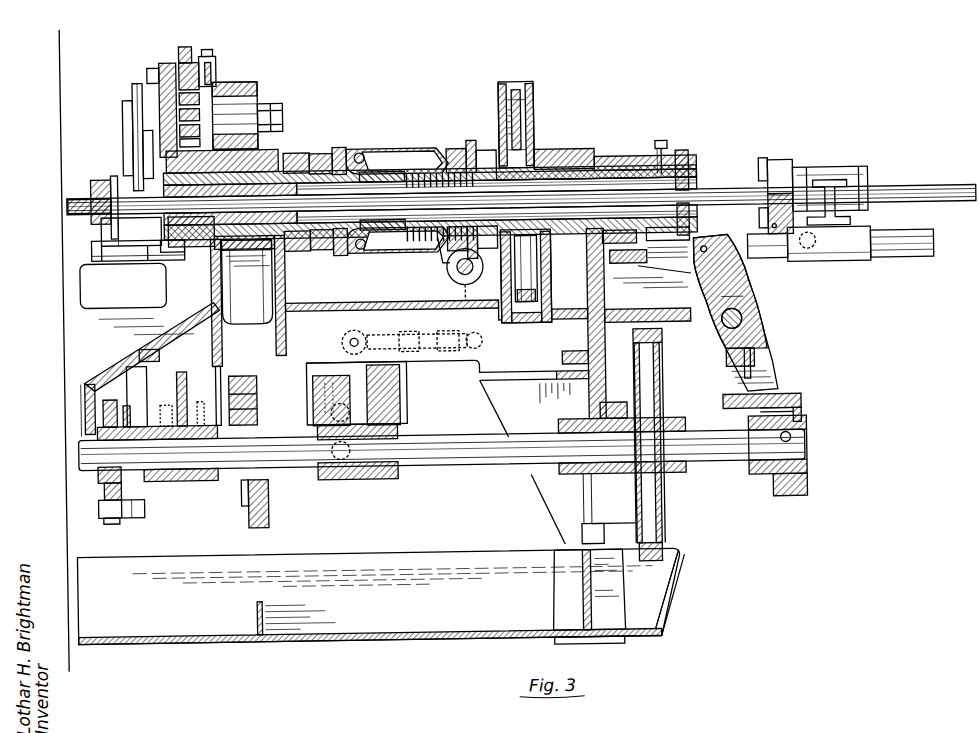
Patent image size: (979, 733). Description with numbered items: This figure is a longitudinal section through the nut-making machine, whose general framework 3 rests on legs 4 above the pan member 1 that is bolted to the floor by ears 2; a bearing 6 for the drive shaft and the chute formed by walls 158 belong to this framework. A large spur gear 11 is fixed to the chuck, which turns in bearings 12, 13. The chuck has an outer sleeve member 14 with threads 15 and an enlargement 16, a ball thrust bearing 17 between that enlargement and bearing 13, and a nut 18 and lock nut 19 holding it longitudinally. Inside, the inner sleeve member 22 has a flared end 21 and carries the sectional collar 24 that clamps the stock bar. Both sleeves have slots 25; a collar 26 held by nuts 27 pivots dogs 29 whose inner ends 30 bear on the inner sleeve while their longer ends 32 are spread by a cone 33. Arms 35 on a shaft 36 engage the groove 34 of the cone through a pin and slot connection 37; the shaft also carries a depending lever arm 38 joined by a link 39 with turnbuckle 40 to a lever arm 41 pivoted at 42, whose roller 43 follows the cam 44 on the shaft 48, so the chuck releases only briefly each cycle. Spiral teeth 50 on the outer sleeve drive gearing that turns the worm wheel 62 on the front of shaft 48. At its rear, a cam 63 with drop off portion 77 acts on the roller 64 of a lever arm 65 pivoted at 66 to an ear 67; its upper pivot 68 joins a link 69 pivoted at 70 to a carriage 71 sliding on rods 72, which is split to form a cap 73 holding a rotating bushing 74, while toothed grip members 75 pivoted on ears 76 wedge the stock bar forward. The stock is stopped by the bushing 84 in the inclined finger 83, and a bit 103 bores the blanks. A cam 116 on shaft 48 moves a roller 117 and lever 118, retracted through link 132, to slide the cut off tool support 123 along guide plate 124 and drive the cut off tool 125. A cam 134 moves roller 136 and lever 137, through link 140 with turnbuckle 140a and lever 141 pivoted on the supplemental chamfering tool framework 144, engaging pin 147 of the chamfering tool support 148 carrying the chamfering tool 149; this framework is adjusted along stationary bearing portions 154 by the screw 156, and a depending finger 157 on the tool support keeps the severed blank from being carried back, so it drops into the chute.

The dish or pan member 1 is at (420, 612).
The outstanding ears 2 is at (600, 640).
The general framework 3 is at (100, 330).
The legs 4 is at (663, 540).
The bearing 6 is at (65, 23).
The large spur gear 11 is at (525, 82).
The bearing 12 is at (570, 150).
The bearing 13 is at (285, 150).
The outer sleeve member 14 is at (625, 158).
The threaded portion 15 is at (322, 150).
The enlargement 16 is at (168, 160).
The ball thrust bearing 17 is at (270, 148).
The nut 18 is at (295, 150).
The lock nut 19 is at (305, 150).
The flared end 21 is at (225, 246).
The inner sleeve member 22 is at (521, 194).
The collar 24 is at (168, 245).
The slots 25 is at (412, 172).
The collar 26 is at (363, 150).
The nuts 27 is at (329, 258).
The dogs 29 is at (392, 148).
The inner ends 30 is at (372, 146).
The outer or longer ends 32 is at (460, 148).
The cone 33 is at (430, 172).
The circumferential groove 34 is at (475, 140).
The arms 35 is at (440, 250).
The shaft 36 is at (458, 272).
The pin and slot connection 37 is at (490, 195).
The depending lever arm 38 is at (460, 320).
The link 39 is at (445, 350).
The turn buckle arrangement 40 is at (412, 350).
The lever arm 41 is at (343, 340).
The pivot 42 is at (330, 380).
The roller 43 is at (341, 484).
The cam 44 is at (400, 412).
The shaft 48 is at (78, 445).
The spiral teeth 50 is at (637, 150).
The worm wheel 62 is at (672, 570).
The cam 63 is at (806, 490).
The roller 64 is at (790, 441).
The lever arm 65 is at (778, 382).
The pivot shaft 66 is at (762, 326).
The outwardly projecting ear 67 is at (700, 320).
The pivot 68 is at (740, 286).
The link 69 is at (775, 262).
The pivotal connection 70 is at (812, 253).
The carriage 71 is at (840, 266).
The rearwardly projecting rods 72 is at (890, 263).
The cap 73 is at (830, 172).
The bushing 74 is at (803, 172).
The grip members 75 is at (762, 172).
The outwardly projecting ears 76 is at (778, 164).
The drop off portion 77 is at (740, 412).
The inclined finger 83 is at (104, 228).
The bushing 84 is at (98, 176).
The bit 103 is at (72, 205).
The cam 116 is at (103, 484).
The roller 117 is at (108, 518).
The lever 118 is at (97, 503).
The cut off tool support 123 is at (100, 245).
The guide plate 124 is at (120, 255).
The cut off tool 125 is at (123, 285).
The link 132 is at (103, 410).
The cam 134 is at (247, 514).
The roller 136 is at (248, 372).
The lever 137 is at (240, 480).
The link 140 is at (222, 72).
The turnbuckle 140a is at (147, 130).
The lever 141 is at (195, 42).
The supplemental chamfering tool framework 144 is at (184, 110).
The pin 147 is at (172, 58).
The chamfering tool support 148 is at (152, 70).
The chamfering tool 149 is at (137, 84).
The stationary bearing portions 154 is at (238, 110).
The screw 156 is at (270, 112).
The depending finger 157 is at (110, 250).
The walls 158 is at (90, 360).